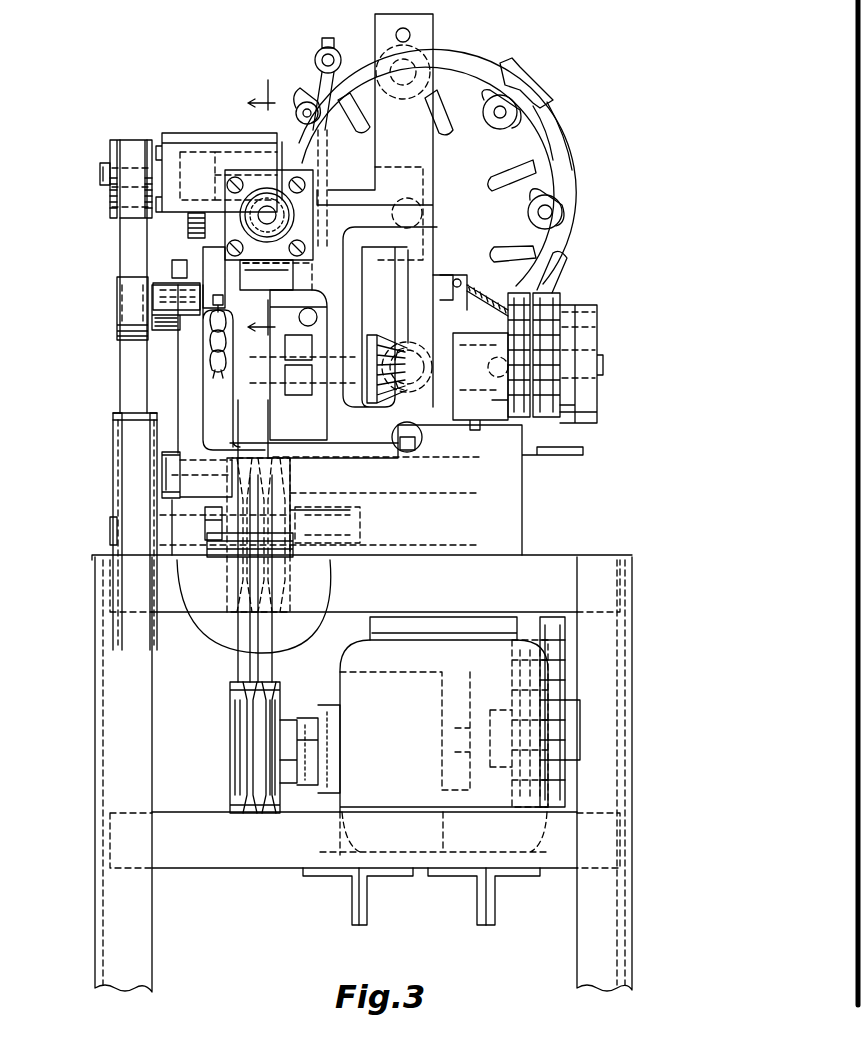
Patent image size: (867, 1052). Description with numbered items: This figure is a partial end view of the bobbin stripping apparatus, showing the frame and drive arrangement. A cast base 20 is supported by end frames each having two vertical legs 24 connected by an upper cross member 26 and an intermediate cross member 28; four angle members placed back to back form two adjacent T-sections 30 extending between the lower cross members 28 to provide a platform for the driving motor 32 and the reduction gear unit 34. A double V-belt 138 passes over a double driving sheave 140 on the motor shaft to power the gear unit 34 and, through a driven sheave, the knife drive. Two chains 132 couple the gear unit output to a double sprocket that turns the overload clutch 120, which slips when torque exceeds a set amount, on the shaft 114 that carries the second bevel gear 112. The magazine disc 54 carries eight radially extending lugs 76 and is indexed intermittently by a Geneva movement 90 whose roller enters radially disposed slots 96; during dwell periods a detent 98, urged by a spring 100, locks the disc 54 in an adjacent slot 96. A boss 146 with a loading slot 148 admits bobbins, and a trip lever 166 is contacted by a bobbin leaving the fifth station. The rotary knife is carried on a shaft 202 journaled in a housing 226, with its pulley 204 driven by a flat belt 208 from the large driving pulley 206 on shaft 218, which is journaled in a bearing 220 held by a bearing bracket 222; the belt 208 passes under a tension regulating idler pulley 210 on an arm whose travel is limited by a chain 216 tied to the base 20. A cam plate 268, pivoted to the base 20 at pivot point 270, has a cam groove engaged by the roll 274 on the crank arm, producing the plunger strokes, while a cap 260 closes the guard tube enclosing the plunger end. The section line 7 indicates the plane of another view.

The section line 7- 7 is at (257, 214).
The cast base 20 is at (522, 540).
The vertical legs 24 is at (95, 940).
The cross member 26 is at (603, 588).
The cross member 28 is at (610, 838).
The T-sections 30 is at (477, 925).
The driving motor 32 is at (444, 736).
The reduction gear unit 34 is at (332, 687).
The disc 54 is at (429, 167).
The lugs 76 is at (517, 177).
The Geneva movement 90 is at (443, 427).
The slots 96 is at (500, 247).
The detent 98 is at (560, 272).
The spring 100 is at (482, 290).
The second bevel gear 112 is at (400, 403).
The shaft 114 is at (600, 370).
The overload clutch 120 is at (612, 336).
The chains 132 is at (565, 682).
The double V-belt 138 is at (238, 665).
The double driving sheave 140 is at (226, 769).
The boss 146 is at (552, 107).
The slot 148 is at (520, 80).
The trip lever 166 is at (322, 44).
The shaft 202 is at (128, 155).
The pulley 204 is at (110, 152).
The large driving pulley 206 is at (110, 483).
The flat belt 208 is at (128, 385).
The idler pulley 210 is at (127, 305).
The chain 216 is at (210, 368).
The shaft 218 is at (110, 535).
The bearing 220 is at (360, 525).
The bearing bracket 222 is at (207, 640).
The housing 226 is at (187, 135).
The cap 260 is at (230, 222).
The cam plate 268 is at (250, 420).
The pivot point 270 is at (217, 527).
The roll 274 is at (263, 380).